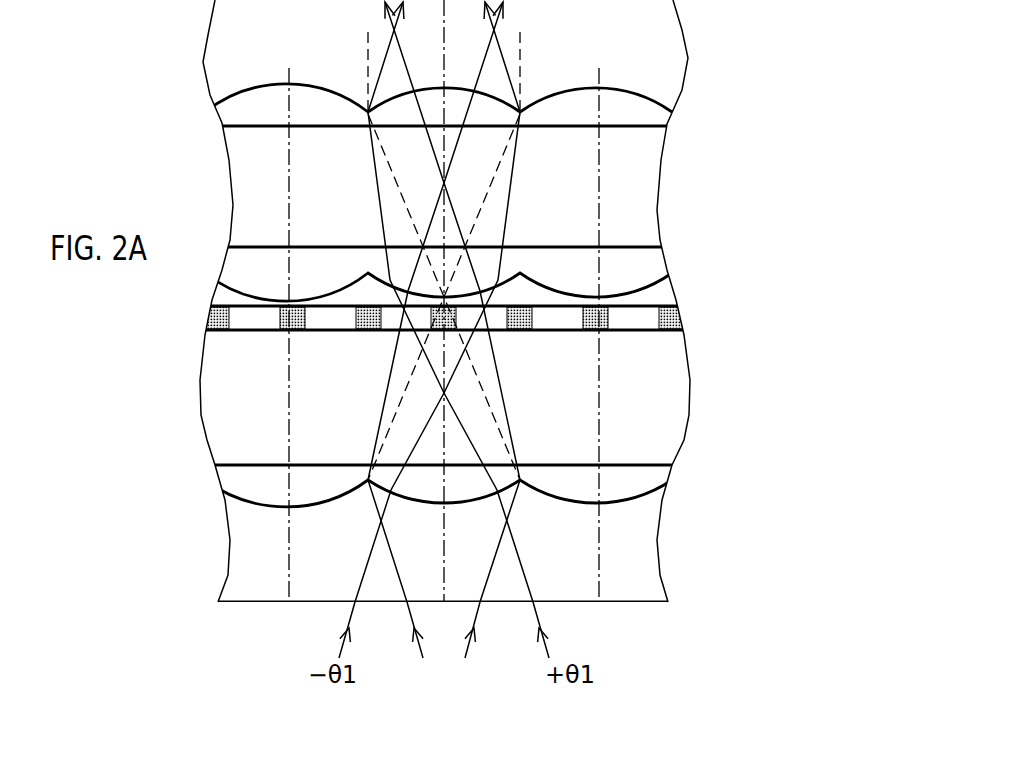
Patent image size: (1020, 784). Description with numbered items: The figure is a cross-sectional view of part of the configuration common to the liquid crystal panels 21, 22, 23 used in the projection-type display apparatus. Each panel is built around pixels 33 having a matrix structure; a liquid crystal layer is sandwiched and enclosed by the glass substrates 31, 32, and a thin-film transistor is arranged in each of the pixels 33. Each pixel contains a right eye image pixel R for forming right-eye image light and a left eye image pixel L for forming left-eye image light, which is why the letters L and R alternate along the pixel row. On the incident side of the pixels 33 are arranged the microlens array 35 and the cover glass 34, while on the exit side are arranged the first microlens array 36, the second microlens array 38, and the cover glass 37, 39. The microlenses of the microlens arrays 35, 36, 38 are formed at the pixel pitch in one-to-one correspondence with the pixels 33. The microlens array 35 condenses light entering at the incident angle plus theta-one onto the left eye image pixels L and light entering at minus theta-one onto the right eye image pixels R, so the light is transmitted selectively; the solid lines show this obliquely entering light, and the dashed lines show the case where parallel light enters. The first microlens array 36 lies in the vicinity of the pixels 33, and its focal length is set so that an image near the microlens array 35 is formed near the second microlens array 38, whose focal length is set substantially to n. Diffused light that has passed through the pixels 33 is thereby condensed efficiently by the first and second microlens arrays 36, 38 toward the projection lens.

The liquid crystal panel 21 is at (750, 602).
The liquid crystal panel 22 is at (468, 301).
The liquid crystal panel 23 is at (468, 301).
The glass substrate 31 is at (658, 395).
The glass substrate 32 is at (667, 292).
The pixel 33 is at (645, 323).
The cover glass 34 is at (643, 545).
The microlens array 35 is at (647, 478).
The first microlens array 36 is at (657, 262).
The cover glass 37 is at (650, 183).
The second microlens array 38 is at (643, 105).
The cover glass 39 is at (670, 38).